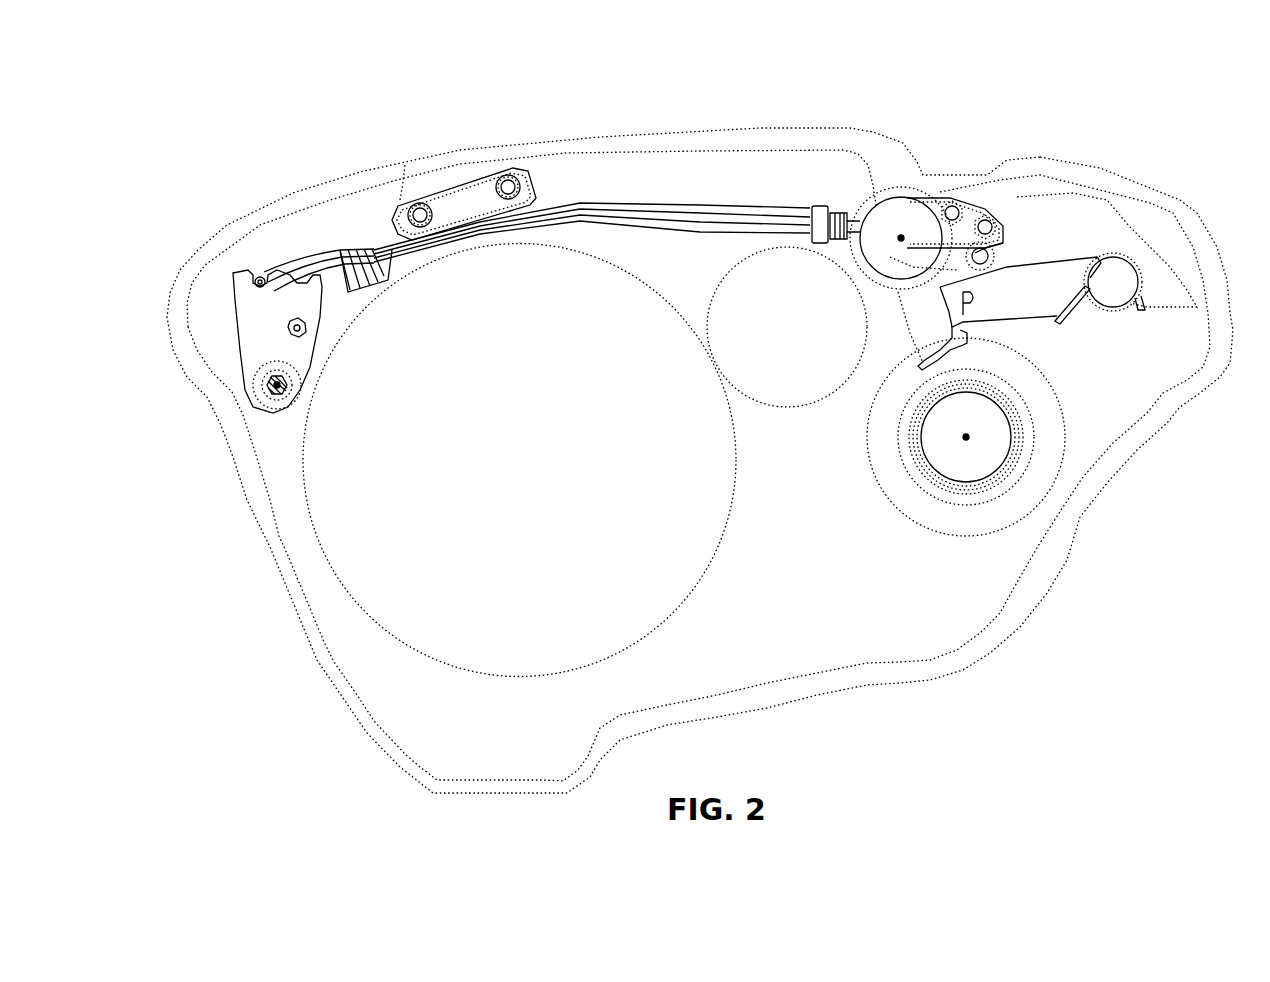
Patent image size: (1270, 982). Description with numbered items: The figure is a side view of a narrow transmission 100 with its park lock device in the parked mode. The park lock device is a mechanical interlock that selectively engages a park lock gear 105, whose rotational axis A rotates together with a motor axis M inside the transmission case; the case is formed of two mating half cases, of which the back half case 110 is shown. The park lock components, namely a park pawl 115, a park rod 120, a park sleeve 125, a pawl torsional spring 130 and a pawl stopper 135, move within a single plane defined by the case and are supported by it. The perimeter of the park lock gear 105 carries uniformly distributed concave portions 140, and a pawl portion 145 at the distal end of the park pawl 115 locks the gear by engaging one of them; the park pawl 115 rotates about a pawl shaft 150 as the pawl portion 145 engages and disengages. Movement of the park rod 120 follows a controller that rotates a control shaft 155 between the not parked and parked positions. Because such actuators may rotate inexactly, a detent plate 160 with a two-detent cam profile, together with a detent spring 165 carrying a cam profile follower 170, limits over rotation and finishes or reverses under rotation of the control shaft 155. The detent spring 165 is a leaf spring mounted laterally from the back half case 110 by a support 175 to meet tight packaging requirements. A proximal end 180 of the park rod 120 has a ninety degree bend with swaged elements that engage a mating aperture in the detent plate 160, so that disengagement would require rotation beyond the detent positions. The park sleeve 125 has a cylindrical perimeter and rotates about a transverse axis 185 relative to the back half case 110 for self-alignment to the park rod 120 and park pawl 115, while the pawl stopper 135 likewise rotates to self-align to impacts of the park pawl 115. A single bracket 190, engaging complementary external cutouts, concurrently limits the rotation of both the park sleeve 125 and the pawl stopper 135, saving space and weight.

The narrow transmission 100 is at (247, 135).
The park lock gear 105 is at (918, 503).
The back half case 110 is at (700, 460).
The park pawl 115 is at (1025, 284).
The park rod 120 is at (705, 223).
The park sleeve 125 is at (918, 246).
The pawl torsional spring 130 is at (1078, 297).
The pawl stopper 135 is at (1026, 283).
The concave portions 140 is at (913, 363).
The pawl portion 145 is at (927, 340).
The pawl shaft 150 is at (1117, 283).
The control shaft 155 is at (285, 393).
The detent plate 160 is at (276, 347).
The detent spring 165 is at (340, 259).
The cam profile follower 170 is at (257, 275).
The support 175 is at (462, 205).
The proximal end 180 is at (304, 328).
The transverse axis 185 is at (900, 238).
The bracket 190 is at (960, 230).
The rotational axis A is at (966, 437).
The motor axis M is at (967, 464).